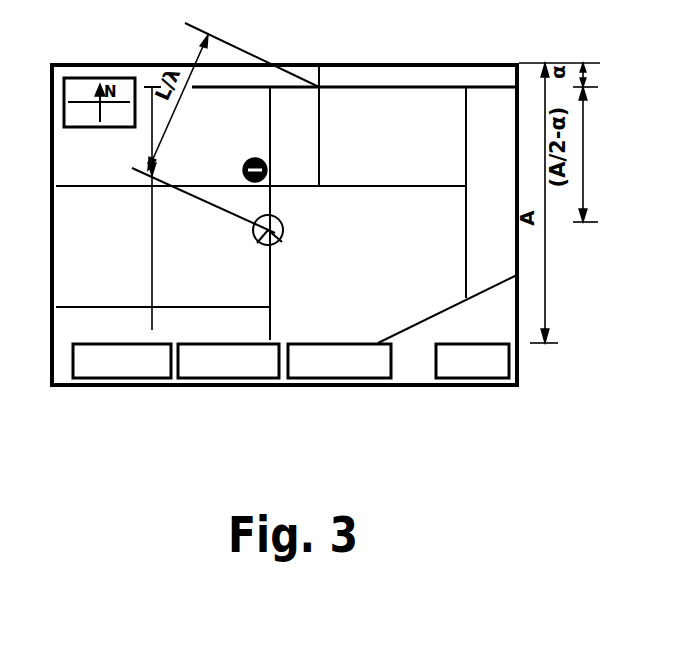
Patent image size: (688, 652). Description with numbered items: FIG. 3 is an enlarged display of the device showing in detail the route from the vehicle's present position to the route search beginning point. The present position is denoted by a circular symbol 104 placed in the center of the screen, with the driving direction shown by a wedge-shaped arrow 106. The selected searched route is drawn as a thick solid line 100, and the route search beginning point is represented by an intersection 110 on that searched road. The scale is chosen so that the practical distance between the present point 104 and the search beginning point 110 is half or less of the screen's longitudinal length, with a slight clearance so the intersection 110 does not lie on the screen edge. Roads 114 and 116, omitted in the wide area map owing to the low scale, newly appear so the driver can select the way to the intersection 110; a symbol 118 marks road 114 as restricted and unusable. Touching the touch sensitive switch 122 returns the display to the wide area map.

The thick solid line 100 is at (417, 90).
The circular symbol 104 is at (283, 213).
The wedge-shaped arrow 106 is at (270, 244).
The intersection 110 is at (320, 90).
The road 114 is at (272, 132).
The road 116 is at (388, 188).
The symbol 118 is at (246, 162).
The touch sensitive switch 122 is at (117, 372).